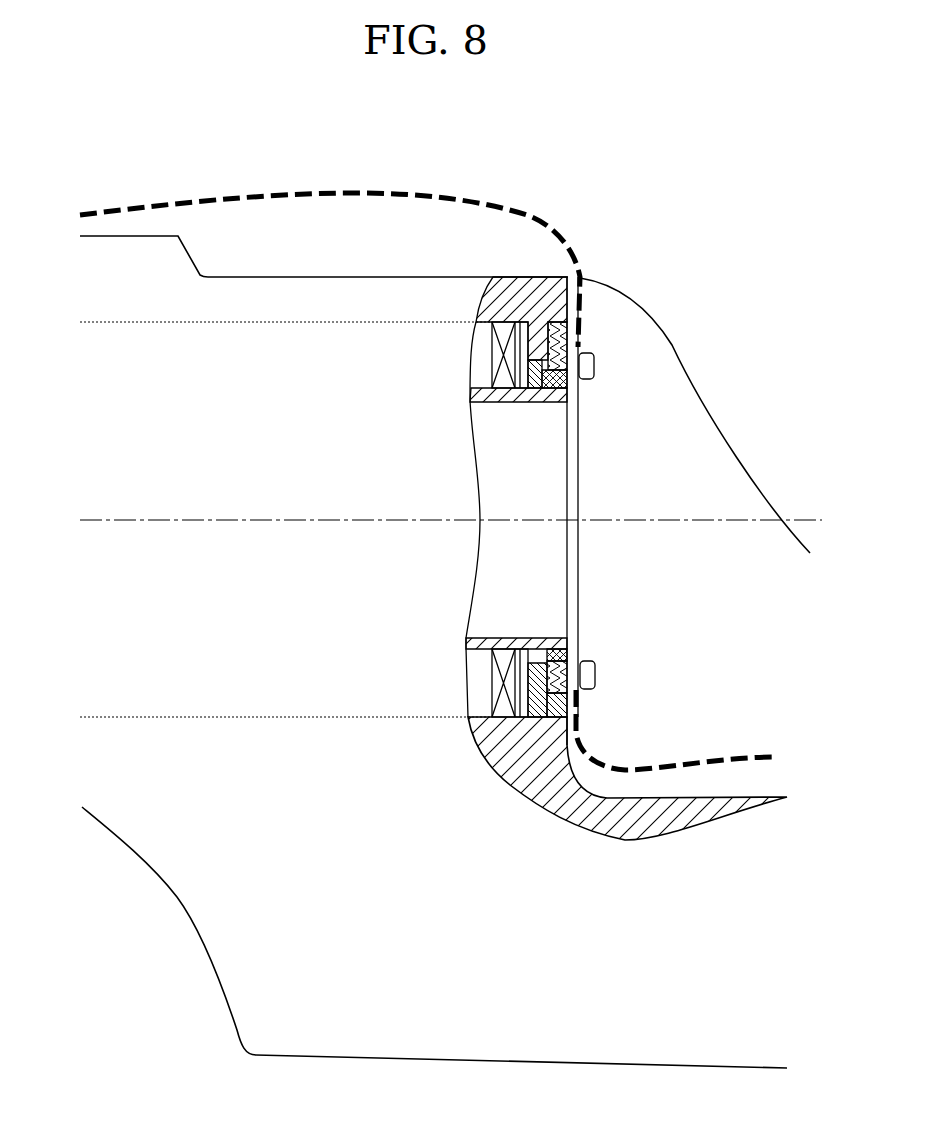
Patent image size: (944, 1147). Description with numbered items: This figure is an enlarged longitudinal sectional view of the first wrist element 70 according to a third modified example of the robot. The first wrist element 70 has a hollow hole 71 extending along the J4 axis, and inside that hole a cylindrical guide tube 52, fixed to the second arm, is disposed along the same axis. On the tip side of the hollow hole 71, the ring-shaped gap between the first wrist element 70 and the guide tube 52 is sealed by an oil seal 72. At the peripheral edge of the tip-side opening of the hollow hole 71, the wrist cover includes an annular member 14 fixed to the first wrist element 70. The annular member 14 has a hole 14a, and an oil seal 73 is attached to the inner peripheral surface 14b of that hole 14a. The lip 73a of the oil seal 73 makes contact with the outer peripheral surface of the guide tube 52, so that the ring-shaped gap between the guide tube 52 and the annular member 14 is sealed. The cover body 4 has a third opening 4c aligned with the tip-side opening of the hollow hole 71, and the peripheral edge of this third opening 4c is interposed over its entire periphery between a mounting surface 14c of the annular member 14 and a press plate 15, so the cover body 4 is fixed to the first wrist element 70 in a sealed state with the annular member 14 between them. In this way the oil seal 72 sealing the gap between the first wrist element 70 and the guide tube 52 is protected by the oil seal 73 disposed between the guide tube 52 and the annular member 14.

The hollow hole 71 is at (260, 322).
The annular member 14 is at (556, 330).
The hole 14a is at (512, 381).
The inner peripheral surface 14b is at (540, 395).
The mounting surface 14c is at (595, 360).
The guide tube 52 is at (490, 658).
The oil seal 72 is at (492, 690).
The oil seal 73 is at (570, 660).
The lip 73a is at (556, 648).
The press plate 15 is at (596, 670).
The cover body 4 is at (742, 755).
The third opening 4c is at (627, 772).
The first wrist element 70 is at (145, 877).